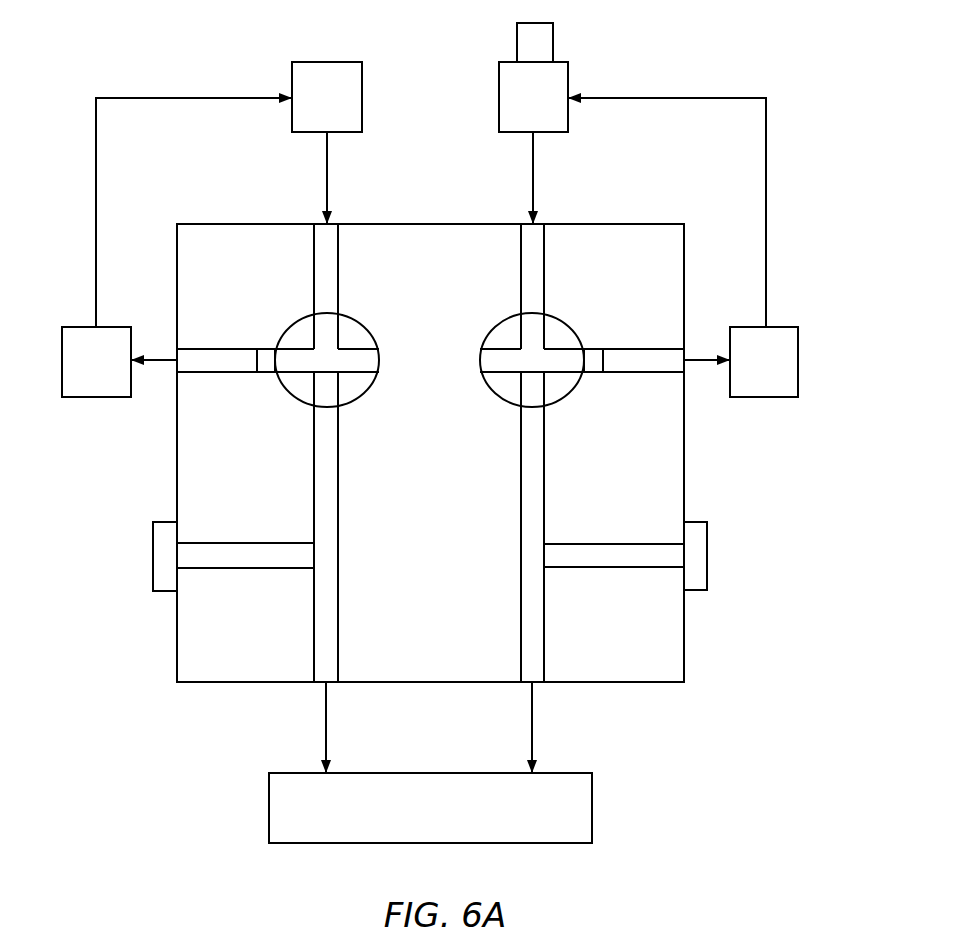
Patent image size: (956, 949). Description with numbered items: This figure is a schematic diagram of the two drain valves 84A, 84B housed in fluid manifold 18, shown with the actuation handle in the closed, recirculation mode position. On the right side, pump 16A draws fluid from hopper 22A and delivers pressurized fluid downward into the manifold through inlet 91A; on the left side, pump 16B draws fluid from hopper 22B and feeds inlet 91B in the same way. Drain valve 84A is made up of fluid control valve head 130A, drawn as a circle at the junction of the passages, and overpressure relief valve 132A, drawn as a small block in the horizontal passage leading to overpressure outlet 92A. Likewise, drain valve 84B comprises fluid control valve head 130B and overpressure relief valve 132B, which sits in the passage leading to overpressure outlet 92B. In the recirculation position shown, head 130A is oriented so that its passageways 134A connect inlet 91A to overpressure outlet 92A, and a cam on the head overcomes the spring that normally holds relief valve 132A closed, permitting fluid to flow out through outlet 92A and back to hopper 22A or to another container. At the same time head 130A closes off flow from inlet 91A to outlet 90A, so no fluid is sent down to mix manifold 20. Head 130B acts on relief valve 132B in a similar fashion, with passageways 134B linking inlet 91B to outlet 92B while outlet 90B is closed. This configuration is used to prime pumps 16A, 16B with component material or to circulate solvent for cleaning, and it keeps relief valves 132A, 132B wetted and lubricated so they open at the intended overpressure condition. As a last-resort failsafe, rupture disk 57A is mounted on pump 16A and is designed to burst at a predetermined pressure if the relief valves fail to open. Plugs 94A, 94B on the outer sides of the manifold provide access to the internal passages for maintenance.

The fluid manifold 18 is at (432, 205).
The pump 16B is at (311, 108).
The pump 16A is at (517, 108).
The rupture disk 57A is at (543, 48).
The hopper 22B is at (80, 372).
The hopper 22A is at (749, 372).
The mix manifold 20 is at (421, 817).
The inlet 91B is at (335, 260).
The inlet 91A is at (546, 260).
The drain valve 84B is at (358, 316).
The drain valve 84A is at (560, 325).
The passageways 134A is at (530, 340).
The passageways 134B is at (331, 343).
The fluid control valve head 130B is at (355, 387).
The fluid control valve head 130A is at (493, 393).
The overpressure relief valve 132B is at (266, 373).
The overpressure relief valve 132A is at (589, 374).
The overpressure outlet 92B is at (204, 373).
The overpressure outlet 92A is at (643, 373).
The outlet 90B is at (315, 637).
The outlet 90A is at (543, 632).
The plug 94B is at (163, 553).
The plug 94A is at (697, 553).